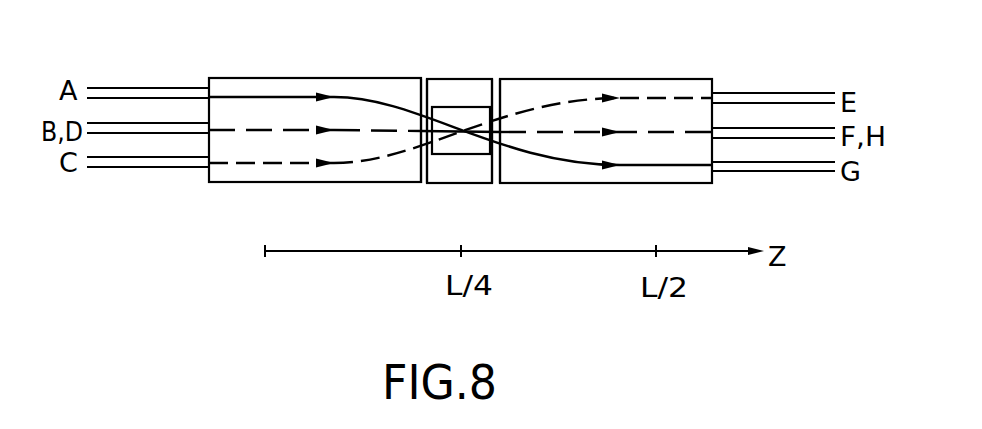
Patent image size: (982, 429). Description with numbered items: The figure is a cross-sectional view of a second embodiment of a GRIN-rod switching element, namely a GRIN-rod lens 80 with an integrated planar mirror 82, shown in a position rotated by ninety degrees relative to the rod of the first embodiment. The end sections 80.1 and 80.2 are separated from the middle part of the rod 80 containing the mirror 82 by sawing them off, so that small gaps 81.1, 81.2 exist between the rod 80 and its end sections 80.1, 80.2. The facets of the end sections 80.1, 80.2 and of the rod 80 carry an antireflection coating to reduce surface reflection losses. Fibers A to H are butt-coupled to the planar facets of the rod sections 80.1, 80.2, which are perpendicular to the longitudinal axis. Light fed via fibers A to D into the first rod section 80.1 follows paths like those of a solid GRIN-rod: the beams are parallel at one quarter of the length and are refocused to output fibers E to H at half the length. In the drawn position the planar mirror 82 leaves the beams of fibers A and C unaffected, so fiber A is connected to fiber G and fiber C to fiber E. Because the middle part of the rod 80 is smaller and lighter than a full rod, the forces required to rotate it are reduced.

The GRIN-rod lens 80 is at (472, 121).
The first end section 80.1 is at (312, 83).
The second end section 80.2 is at (600, 88).
The integrated planar mirror 82 is at (452, 113).
The first small gap 81.1 is at (423, 183).
The second small gap 81.2 is at (495, 183).